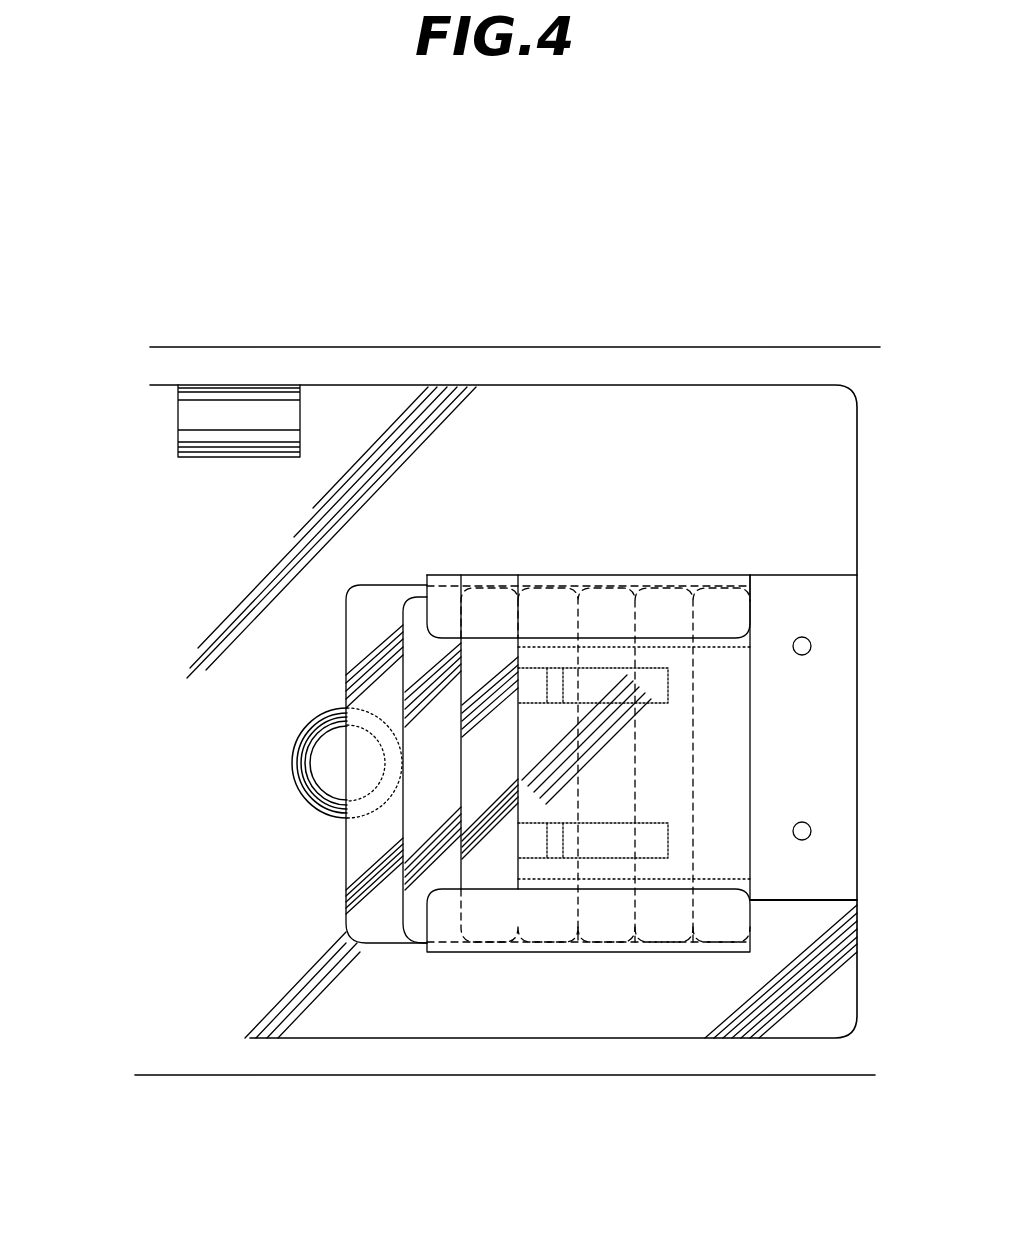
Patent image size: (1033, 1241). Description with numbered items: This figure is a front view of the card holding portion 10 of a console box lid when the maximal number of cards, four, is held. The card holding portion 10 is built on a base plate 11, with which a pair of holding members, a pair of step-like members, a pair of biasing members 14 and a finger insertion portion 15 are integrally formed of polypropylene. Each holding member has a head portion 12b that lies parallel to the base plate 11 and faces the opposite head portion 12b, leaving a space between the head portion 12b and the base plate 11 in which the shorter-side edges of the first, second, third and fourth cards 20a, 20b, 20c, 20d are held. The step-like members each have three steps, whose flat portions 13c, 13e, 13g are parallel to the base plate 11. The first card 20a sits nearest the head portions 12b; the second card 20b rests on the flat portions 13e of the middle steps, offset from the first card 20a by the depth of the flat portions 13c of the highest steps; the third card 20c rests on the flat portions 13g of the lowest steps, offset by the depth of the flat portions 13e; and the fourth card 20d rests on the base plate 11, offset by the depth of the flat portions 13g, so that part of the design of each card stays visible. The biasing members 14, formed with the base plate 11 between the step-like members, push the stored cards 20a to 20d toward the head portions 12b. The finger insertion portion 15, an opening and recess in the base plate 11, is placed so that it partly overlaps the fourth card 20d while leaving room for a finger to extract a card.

The card holding portion 10 is at (373, 426).
The base plate 11 is at (178, 840).
The head portion 12b is at (750, 577).
The flat portion of the highest step 13c is at (730, 632).
The flat portion of the middle step 13e is at (672, 632).
The flat portion of the lowest step 13g is at (607, 632).
The biasing member 14 is at (605, 845).
The finger insertion portion 15 is at (331, 780).
The first card 20a is at (725, 717).
The second card 20b is at (485, 655).
The third card 20c is at (418, 607).
The fourth card 20d is at (345, 662).